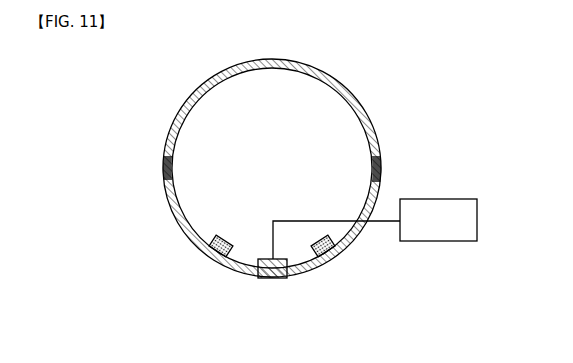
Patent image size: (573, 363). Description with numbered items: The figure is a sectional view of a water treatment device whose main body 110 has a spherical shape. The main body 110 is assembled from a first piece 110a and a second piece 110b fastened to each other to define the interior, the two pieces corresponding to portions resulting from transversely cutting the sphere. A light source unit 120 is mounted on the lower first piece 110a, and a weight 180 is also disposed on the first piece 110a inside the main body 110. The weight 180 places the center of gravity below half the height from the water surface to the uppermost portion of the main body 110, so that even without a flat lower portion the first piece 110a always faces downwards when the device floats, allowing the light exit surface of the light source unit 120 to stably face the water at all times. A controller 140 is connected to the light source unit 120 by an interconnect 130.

The main body 110 is at (63, 135).
The first piece 110a is at (168, 198).
The second piece 110b is at (168, 137).
The light source unit 120 is at (270, 279).
The interconnect 130 is at (385, 221).
The controller 140 is at (456, 199).
The weight 180 is at (318, 268).